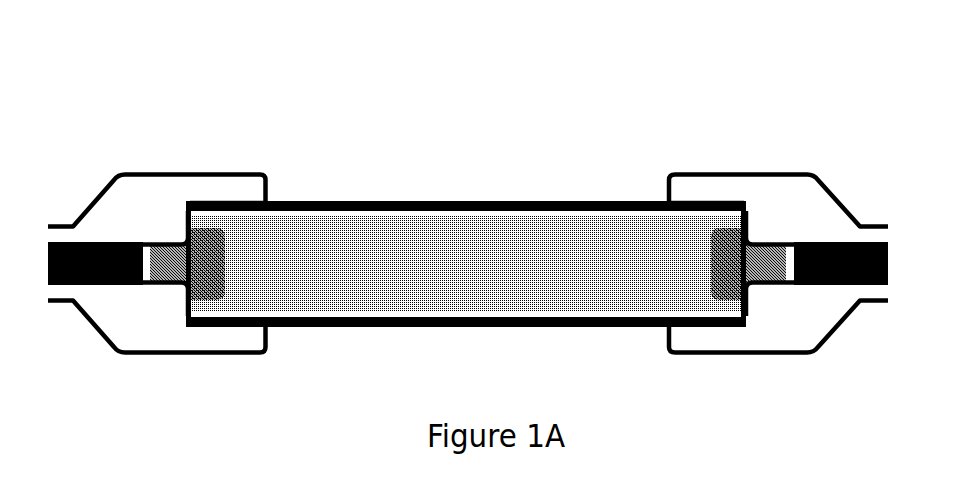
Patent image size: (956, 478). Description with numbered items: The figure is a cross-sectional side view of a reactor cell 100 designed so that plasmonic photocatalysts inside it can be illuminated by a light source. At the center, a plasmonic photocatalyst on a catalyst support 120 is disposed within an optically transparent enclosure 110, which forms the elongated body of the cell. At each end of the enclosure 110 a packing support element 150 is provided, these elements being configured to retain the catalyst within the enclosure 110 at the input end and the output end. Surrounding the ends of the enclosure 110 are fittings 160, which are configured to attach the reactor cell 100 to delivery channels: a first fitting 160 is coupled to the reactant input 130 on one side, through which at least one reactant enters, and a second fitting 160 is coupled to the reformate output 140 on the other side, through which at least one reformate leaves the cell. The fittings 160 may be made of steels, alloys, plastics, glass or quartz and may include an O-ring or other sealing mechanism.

The reactor cell 100 is at (143, 126).
The optically transparent enclosure 110 is at (345, 202).
The catalyst support 120 is at (362, 302).
The reactant input 130 is at (43, 262).
The reformate output 140 is at (898, 258).
The packing support element 150 is at (227, 268).
The fitting 160 is at (200, 156).